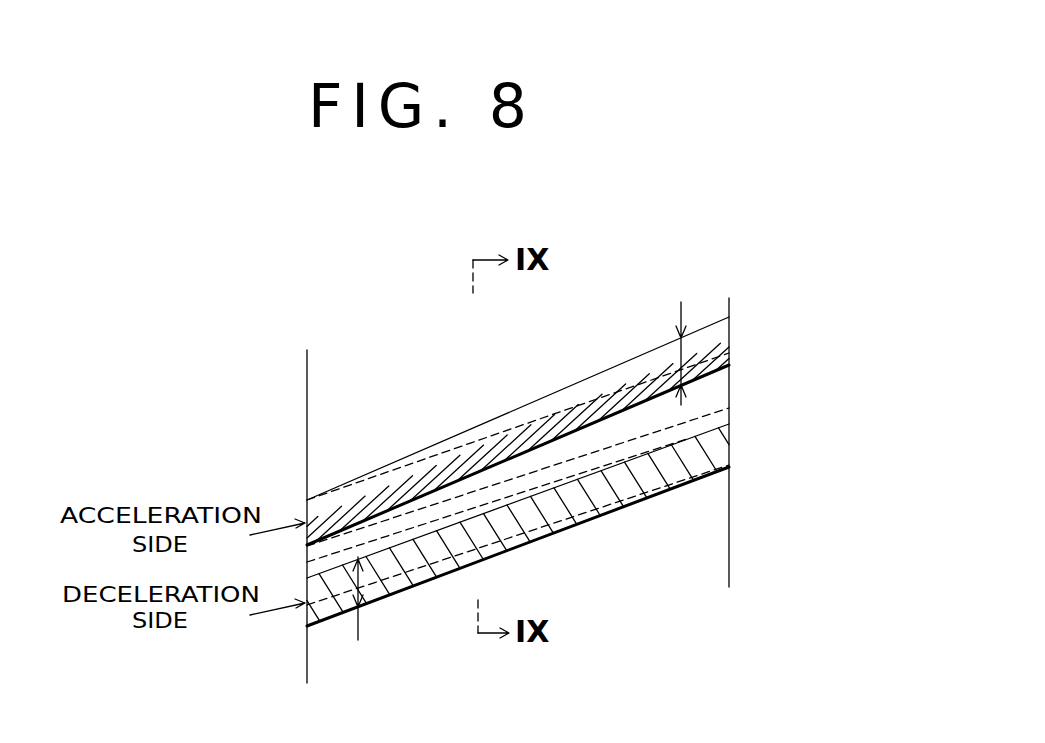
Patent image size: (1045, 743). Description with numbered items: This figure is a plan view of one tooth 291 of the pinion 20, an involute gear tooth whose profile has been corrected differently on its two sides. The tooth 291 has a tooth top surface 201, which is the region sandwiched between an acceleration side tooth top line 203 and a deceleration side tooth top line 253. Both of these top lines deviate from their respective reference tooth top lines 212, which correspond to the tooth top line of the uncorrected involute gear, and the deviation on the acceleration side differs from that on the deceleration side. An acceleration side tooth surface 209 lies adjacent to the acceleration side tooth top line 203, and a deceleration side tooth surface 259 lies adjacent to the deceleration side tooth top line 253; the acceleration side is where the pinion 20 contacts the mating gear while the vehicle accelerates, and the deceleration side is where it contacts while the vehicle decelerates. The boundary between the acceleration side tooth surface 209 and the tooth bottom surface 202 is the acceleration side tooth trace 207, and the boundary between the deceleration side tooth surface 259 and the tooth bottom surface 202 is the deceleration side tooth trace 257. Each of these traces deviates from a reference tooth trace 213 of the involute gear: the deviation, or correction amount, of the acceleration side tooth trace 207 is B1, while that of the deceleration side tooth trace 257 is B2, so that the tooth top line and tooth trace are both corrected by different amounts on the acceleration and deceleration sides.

The pinion 20 is at (763, 261).
The tooth top surface 201 is at (708, 400).
The tooth bottom surface 202 is at (360, 382).
The acceleration side tooth top line 203 is at (705, 383).
The acceleration side tooth trace 207 is at (560, 389).
The acceleration side tooth surface 209 is at (705, 350).
The reference tooth top line 212 is at (637, 460).
The reference tooth trace 213 is at (460, 445).
The deceleration side tooth top line 253 is at (703, 450).
The deceleration side tooth trace 257 is at (562, 537).
The deceleration side tooth surface 259 is at (693, 486).
The tooth 291 is at (751, 520).
The deviation of the acceleration side tooth trace B1 is at (677, 355).
The deviation of the deceleration side tooth trace B2 is at (363, 607).